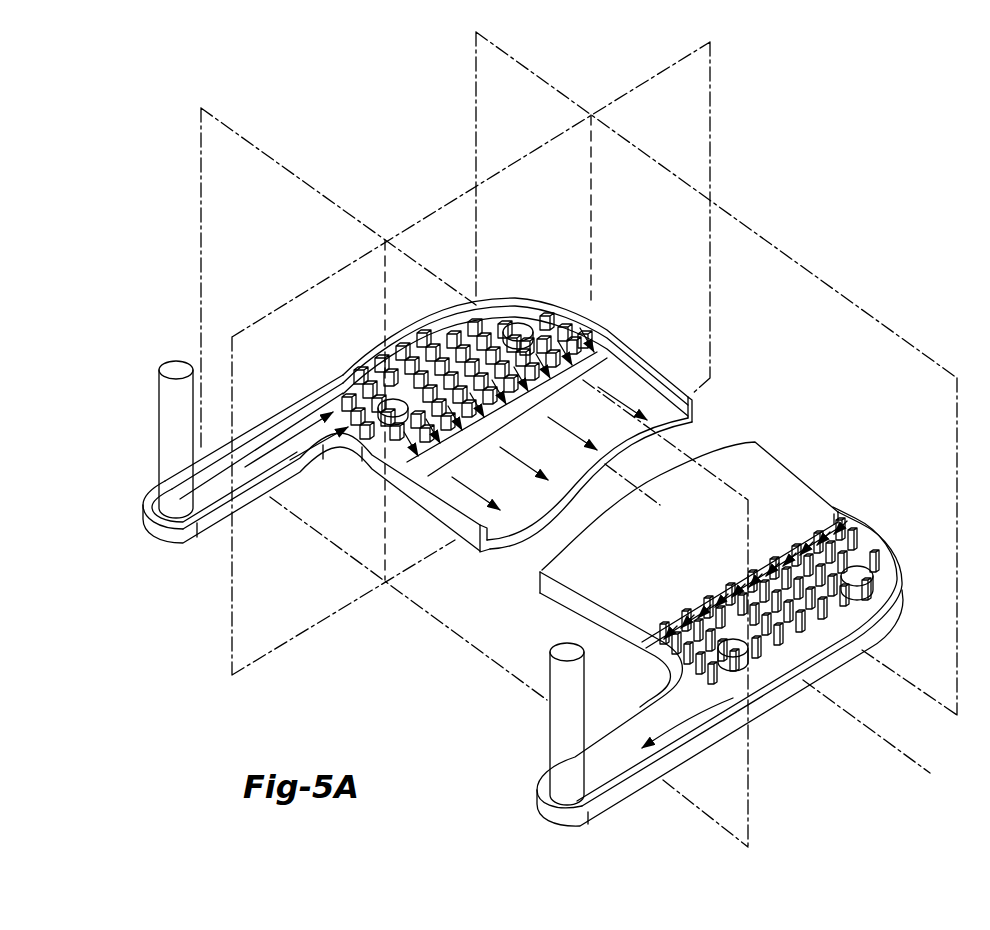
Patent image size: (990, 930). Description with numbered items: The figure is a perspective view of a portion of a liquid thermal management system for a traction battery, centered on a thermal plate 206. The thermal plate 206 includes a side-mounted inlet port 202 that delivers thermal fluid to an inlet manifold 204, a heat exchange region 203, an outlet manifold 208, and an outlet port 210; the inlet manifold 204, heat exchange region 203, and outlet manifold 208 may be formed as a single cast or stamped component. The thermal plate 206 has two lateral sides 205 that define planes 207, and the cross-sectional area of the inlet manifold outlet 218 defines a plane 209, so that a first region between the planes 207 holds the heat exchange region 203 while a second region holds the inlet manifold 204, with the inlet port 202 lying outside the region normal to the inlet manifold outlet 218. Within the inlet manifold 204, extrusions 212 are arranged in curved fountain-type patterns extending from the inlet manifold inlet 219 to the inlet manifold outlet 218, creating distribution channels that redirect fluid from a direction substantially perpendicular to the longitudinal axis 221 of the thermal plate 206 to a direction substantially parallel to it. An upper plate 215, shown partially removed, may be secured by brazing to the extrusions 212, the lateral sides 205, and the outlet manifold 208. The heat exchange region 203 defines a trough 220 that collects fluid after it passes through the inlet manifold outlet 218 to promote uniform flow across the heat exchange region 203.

The inlet port 202 is at (173, 453).
The heat exchange region 203 is at (623, 387).
The inlet manifold 204 is at (516, 318).
The lateral sides 205 is at (653, 367).
The thermal plate 206 is at (405, 178).
The planes 207 is at (222, 208).
The outlet manifold 208 is at (878, 546).
The plane 209 is at (286, 598).
The outlet port 210 is at (567, 742).
The extrusions 212 is at (432, 365).
The upper plate 215 is at (770, 487).
The inlet manifold outlet 218 is at (560, 302).
The inlet manifold inlet 219 is at (332, 400).
The trough 220 is at (498, 420).
The longitudinal axis 221 is at (890, 750).